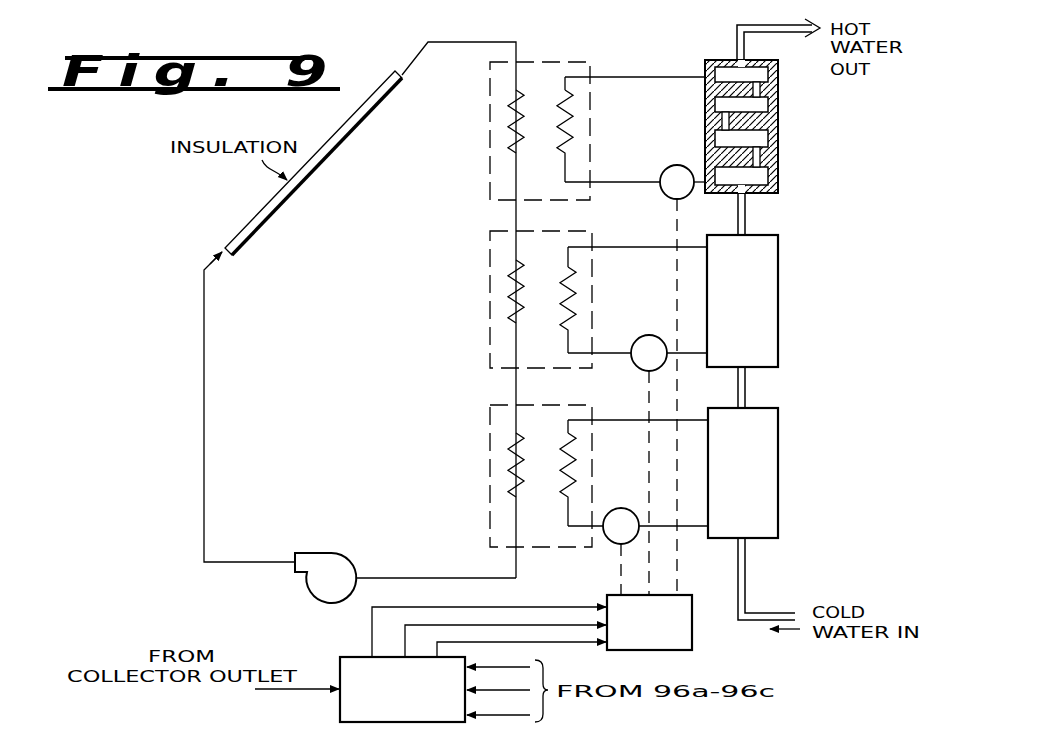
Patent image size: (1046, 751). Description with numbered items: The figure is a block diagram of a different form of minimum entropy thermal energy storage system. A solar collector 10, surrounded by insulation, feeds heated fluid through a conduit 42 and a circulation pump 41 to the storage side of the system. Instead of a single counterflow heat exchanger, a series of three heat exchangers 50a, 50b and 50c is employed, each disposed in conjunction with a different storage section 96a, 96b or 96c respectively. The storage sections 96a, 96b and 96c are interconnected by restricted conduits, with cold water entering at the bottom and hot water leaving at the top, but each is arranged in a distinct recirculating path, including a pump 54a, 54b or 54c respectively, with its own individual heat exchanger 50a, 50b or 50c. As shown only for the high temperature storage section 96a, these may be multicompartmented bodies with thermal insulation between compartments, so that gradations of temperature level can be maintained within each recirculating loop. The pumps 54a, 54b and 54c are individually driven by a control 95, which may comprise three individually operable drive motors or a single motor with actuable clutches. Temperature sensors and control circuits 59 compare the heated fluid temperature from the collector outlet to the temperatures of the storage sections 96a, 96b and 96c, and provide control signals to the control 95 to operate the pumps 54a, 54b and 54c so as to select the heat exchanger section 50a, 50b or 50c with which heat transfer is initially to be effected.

The solar collector panel 10 is at (228, 227).
The collector circulation pump 41 is at (335, 553).
The collector return conduit 42 is at (204, 489).
The first heat exchanger 50a is at (490, 141).
The second heat exchanger 50b is at (490, 318).
The third heat exchanger 50c is at (490, 482).
The pump 54a is at (677, 165).
The pump 54b is at (648, 335).
The pump 54c is at (621, 508).
The temperature sensors and control circuits 59 is at (340, 657).
The control 95 is at (612, 594).
The high temperature storage section 96a is at (781, 136).
The storage section 96b is at (748, 310).
The storage section 96c is at (755, 485).